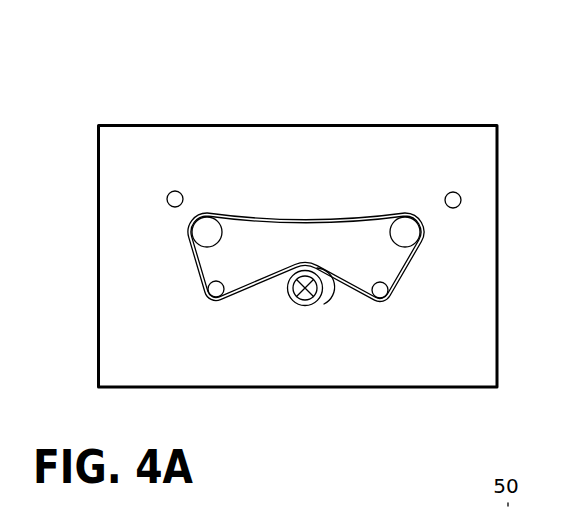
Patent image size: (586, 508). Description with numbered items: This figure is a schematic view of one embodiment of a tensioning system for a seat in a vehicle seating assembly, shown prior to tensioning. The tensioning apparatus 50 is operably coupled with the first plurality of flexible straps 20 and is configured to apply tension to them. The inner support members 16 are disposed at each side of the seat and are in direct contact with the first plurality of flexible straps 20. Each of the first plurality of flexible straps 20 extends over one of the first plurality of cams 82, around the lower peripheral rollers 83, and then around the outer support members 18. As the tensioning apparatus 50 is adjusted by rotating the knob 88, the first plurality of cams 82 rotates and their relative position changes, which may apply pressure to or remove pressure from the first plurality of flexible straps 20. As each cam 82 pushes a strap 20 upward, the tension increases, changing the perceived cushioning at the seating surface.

The tensioning apparatus 50 is at (474, 118).
The first plurality of flexible straps 20 is at (289, 219).
The inner support member 16 is at (222, 225).
The outer support member 18 is at (167, 207).
The first plurality of cams 82 is at (343, 274).
The lower peripheral rollers 83 is at (212, 302).
The knob 88 is at (302, 306).